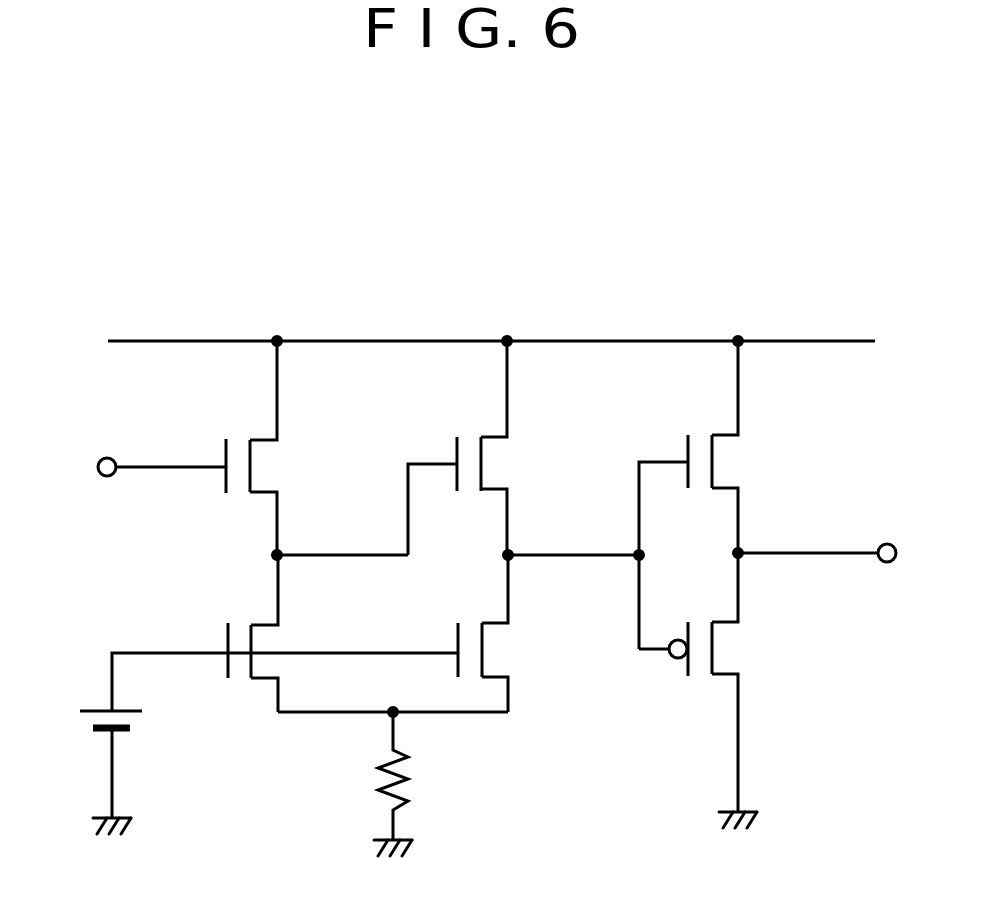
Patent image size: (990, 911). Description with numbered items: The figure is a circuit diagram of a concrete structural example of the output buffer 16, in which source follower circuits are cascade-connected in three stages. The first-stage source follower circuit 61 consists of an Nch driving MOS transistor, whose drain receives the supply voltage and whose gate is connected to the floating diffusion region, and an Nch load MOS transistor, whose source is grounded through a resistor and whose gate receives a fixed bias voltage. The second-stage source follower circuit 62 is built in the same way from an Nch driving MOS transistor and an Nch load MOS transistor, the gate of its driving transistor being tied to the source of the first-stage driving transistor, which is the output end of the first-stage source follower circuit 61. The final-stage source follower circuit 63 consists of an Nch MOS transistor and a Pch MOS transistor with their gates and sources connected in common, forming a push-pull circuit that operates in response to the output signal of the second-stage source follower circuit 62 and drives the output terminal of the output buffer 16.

The output buffer 16 is at (777, 165).
The first-stage source follower circuit 61 is at (312, 430).
The second-stage source follower circuit 62 is at (543, 430).
The final-stage source follower circuit 63 is at (610, 770).